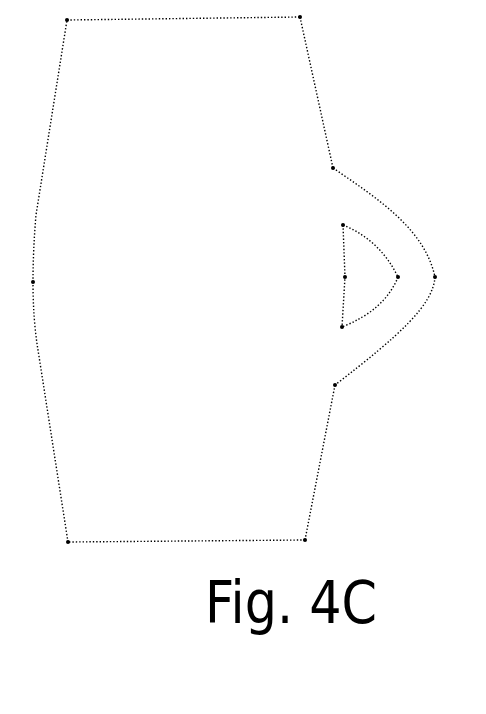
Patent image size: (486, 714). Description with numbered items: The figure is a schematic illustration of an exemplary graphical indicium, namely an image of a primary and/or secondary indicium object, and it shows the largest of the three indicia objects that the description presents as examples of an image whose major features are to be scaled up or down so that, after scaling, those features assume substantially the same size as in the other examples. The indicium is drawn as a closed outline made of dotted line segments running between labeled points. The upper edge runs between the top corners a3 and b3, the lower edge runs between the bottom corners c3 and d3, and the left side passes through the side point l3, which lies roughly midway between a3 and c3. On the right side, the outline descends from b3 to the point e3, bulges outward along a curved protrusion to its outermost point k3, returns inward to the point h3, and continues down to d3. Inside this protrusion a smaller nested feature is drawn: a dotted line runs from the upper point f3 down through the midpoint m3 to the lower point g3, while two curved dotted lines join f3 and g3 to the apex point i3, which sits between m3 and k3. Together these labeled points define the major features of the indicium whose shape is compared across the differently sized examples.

The pattern point a3 (top-left corner) a3 is at (80, 32).
The pattern point b3 (top-right corner) b3 is at (288, 31).
The pattern point c3 (bottom-left corner) c3 is at (80, 530).
The pattern point d3 (bottom-right corner) d3 is at (290, 529).
The pattern point e3 (start of side protrusion) e3 is at (318, 171).
The pattern point f3 (top of inner notch) f3 is at (330, 226).
The pattern point m3 (midpoint of inner line) m3 is at (329, 277).
The pattern point i3 (apex of inner notch) i3 is at (386, 277).
The pattern point k3 (apex of side protrusion) k3 is at (422, 277).
The pattern point g3 (bottom of inner notch) g3 is at (325, 326).
The pattern point h3 (end of side protrusion) h3 is at (316, 387).
The pattern point l3 (left side midpoint) l3 is at (44, 285).